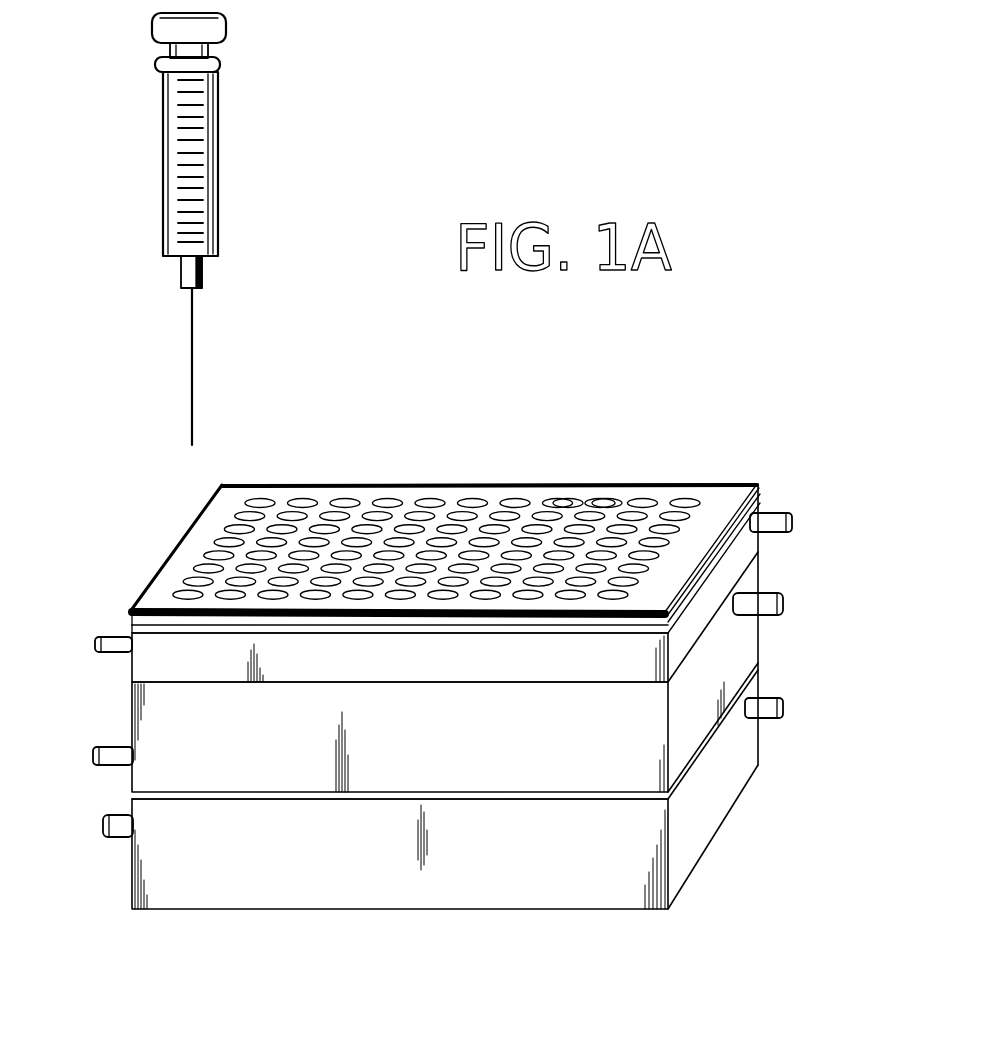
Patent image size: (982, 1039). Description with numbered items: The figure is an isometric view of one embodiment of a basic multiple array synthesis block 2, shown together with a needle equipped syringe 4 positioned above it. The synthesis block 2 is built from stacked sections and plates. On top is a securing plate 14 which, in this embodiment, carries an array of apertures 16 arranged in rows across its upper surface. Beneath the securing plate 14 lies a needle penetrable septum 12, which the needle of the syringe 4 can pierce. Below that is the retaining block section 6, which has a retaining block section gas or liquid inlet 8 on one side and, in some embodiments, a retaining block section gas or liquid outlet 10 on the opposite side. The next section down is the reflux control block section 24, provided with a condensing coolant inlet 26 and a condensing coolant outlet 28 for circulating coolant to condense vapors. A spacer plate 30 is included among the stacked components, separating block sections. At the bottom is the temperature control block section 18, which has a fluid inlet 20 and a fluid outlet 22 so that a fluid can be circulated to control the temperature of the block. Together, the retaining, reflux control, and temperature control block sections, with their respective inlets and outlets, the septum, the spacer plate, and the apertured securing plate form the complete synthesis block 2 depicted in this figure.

The multiple array synthesis block 2 is at (445, 630).
The needle equipped syringe 4 is at (275, 141).
The retaining block section 6 is at (740, 553).
The retaining block section gas or liquid inlet 8 is at (783, 513).
The retaining block section gas or liquid outlet 10 is at (107, 652).
The needle penetrable septum 12 is at (130, 629).
The securing plate 14 is at (158, 600).
The array of apertures 16 is at (607, 503).
The temperature control block section 18 is at (740, 770).
The fluid inlet 20 is at (780, 718).
The fluid outlet 22 is at (110, 838).
The reflux control block section 24 is at (747, 648).
The condensing coolant inlet 26 is at (783, 599).
The condensing coolant outlet 28 is at (102, 767).
The spacer plate 30 is at (750, 678).